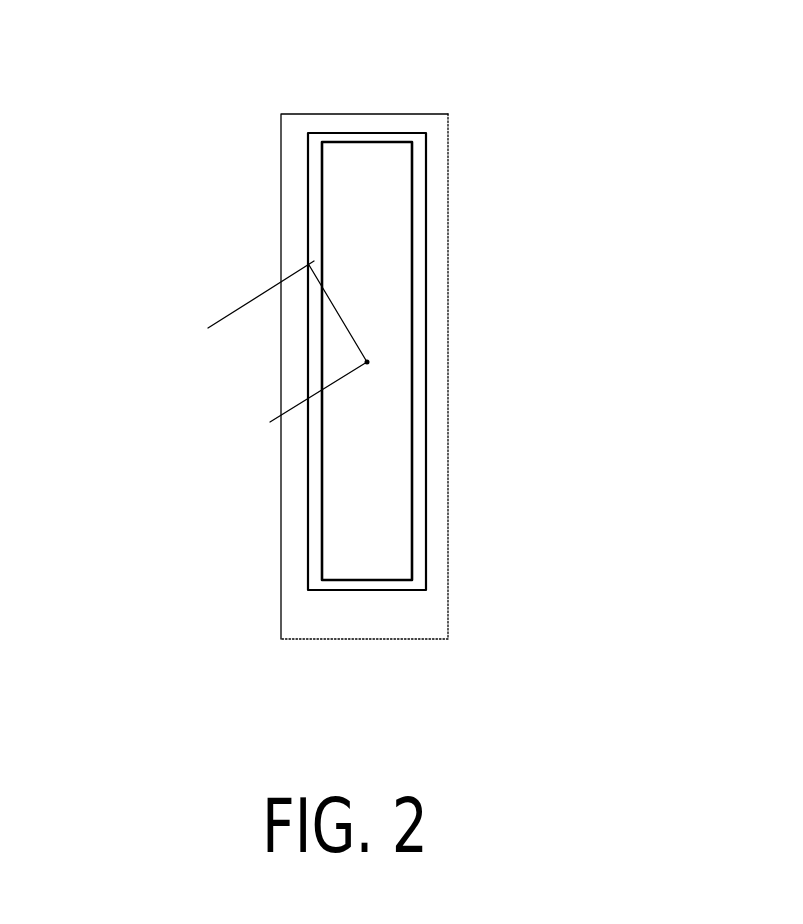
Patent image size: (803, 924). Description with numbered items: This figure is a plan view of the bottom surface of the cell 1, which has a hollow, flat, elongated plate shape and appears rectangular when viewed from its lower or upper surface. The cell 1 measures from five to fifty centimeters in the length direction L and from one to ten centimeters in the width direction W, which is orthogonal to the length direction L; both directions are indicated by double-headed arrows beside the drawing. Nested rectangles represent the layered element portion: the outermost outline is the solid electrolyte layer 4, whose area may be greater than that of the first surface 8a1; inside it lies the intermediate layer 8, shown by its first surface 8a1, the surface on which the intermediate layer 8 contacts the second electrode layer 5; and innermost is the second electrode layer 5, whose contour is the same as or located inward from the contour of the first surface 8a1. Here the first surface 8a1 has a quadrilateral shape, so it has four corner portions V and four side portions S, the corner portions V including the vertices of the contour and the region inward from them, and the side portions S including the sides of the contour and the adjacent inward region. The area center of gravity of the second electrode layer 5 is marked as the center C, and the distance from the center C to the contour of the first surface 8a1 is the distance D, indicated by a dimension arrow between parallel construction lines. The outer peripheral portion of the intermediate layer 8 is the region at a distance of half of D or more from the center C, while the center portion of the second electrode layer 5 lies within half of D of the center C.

The cell 1 is at (446, 330).
The solid electrolyte layer 4 is at (435, 552).
The second electrode layer 5 is at (373, 472).
The intermediate layer 8 is at (460, 361).
The first surface 8a1 is at (418, 518).
The side portions S is at (353, 135).
The corner portions V is at (311, 138).
The center C is at (370, 367).
The distance D is at (217, 325).
The length direction L is at (102, 260).
The width direction W is at (210, 728).